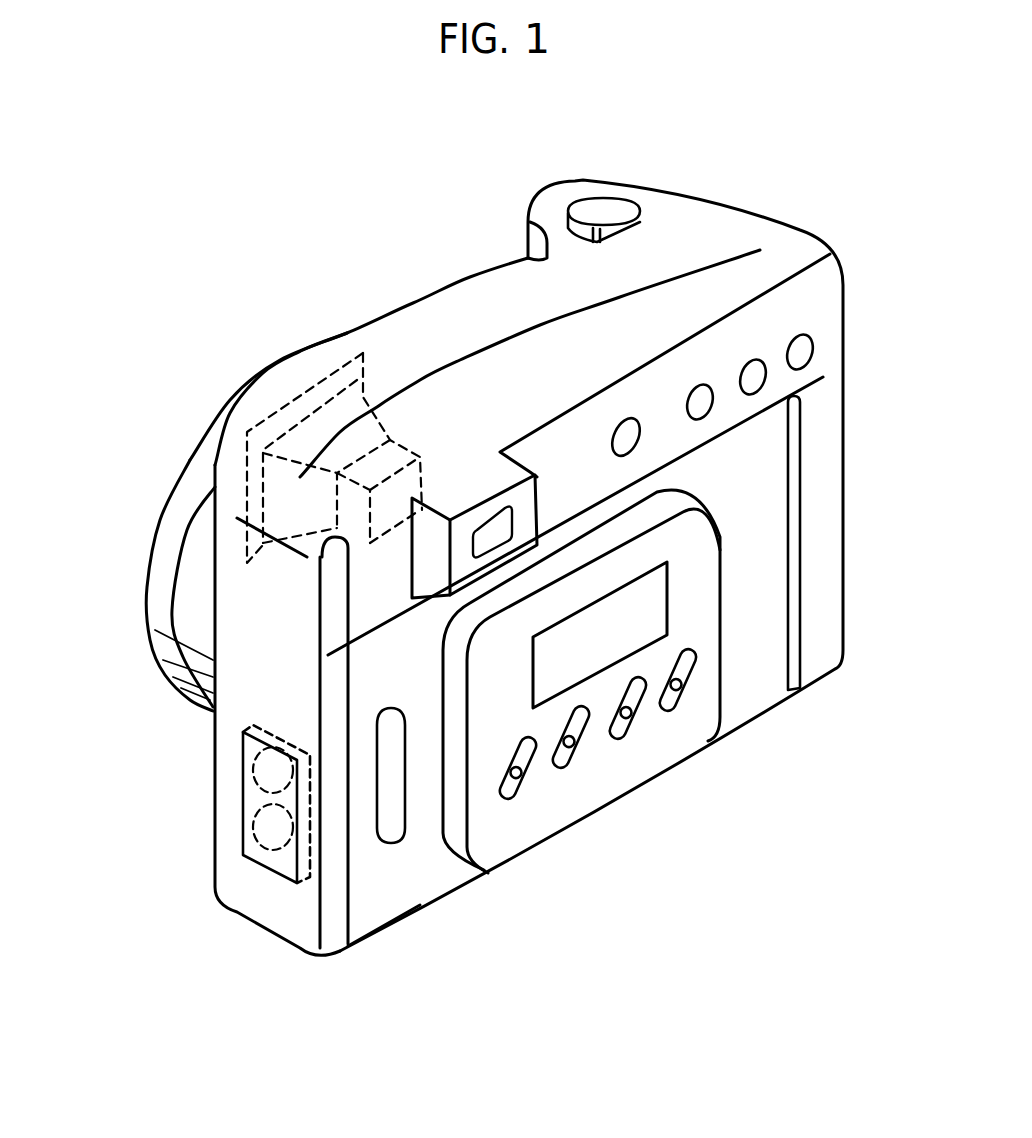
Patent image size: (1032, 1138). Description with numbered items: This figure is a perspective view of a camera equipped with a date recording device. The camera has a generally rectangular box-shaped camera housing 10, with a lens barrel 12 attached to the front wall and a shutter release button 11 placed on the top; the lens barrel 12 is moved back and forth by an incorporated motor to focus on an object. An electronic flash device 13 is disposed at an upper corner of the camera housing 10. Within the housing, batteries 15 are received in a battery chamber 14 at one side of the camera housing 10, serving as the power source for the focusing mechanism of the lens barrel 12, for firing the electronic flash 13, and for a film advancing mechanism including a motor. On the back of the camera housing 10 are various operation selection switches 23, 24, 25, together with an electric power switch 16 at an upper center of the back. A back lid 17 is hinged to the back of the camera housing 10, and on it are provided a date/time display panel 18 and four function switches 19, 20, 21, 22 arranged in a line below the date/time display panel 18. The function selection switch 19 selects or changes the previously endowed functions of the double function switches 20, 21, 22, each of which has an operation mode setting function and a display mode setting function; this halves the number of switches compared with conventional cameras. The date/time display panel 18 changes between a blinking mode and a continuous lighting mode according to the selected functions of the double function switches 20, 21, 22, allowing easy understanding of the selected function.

The camera housing 10 is at (800, 248).
The shutter release button 11 is at (615, 210).
The lens barrel 12 is at (152, 608).
The electronic flash device 13 is at (285, 420).
The battery chamber 14 is at (247, 795).
The batteries 15 is at (247, 758).
The electric power switch 16 is at (639, 436).
The back lid 17 is at (408, 892).
The date/time display panel 18 is at (650, 600).
The function selection switch 19 is at (527, 780).
The double function switch 20 is at (583, 750).
The double function switch 21 is at (633, 717).
The double function switch 22 is at (683, 687).
The operation selection switch 23 is at (702, 385).
The operation selection switch 24 is at (756, 360).
The operation selection switch 25 is at (803, 336).